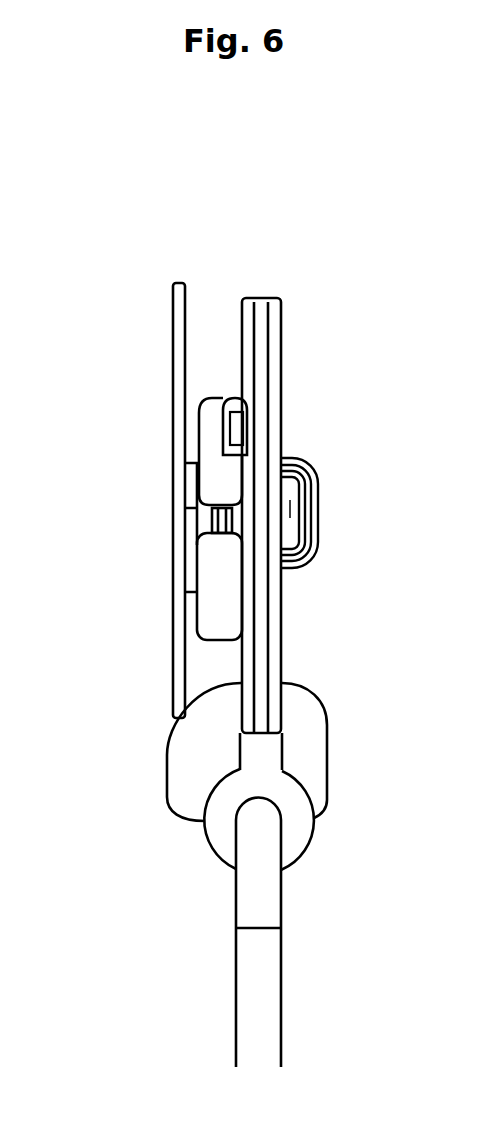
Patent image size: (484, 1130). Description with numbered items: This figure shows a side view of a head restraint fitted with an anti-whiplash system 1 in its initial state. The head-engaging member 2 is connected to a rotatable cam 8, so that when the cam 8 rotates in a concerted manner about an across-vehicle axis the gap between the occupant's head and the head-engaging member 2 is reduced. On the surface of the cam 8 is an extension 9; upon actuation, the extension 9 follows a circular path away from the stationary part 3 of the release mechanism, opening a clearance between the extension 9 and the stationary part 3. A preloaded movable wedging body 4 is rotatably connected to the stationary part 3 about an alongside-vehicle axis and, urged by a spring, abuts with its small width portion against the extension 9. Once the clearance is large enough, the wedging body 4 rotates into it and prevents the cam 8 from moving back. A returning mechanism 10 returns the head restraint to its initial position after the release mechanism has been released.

The connecting assembly 1 is at (142, 829).
The head-engaging member 2 is at (178, 395).
The stationary part 3 is at (262, 437).
The wedging body 4 is at (237, 438).
The cam 8 is at (217, 472).
The extension 9 is at (227, 400).
The returning mechanism 10 is at (290, 505).